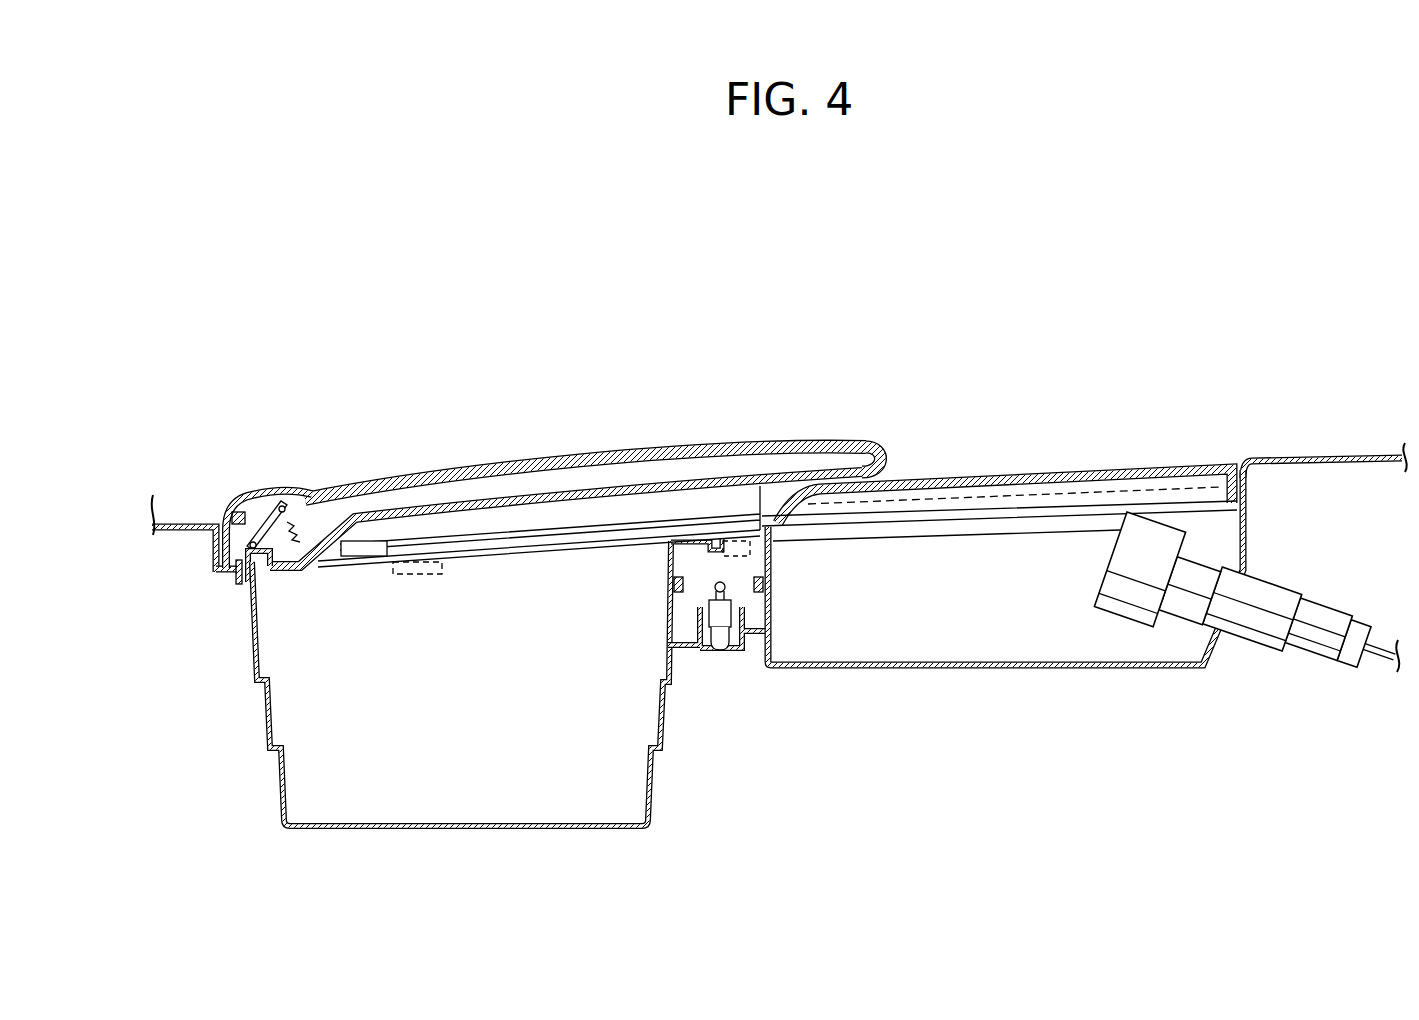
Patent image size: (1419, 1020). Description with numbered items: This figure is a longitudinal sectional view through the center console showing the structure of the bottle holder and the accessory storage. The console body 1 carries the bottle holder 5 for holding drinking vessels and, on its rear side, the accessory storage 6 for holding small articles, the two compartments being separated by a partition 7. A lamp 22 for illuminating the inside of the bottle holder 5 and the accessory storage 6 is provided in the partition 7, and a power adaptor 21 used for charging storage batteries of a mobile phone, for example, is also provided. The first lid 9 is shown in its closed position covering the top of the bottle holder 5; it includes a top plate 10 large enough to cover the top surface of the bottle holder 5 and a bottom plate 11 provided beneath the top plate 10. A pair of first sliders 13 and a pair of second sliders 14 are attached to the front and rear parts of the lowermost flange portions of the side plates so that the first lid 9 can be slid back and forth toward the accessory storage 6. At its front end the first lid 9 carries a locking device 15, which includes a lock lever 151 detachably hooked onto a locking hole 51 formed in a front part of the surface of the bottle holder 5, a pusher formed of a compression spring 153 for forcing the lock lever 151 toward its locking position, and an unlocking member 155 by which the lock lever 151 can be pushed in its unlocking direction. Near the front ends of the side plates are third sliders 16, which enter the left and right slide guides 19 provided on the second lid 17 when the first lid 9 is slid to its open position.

The console body 1 is at (1290, 446).
The bottle holder 5 is at (462, 813).
The accessory storage 6 is at (997, 652).
The partition 7 is at (712, 528).
The first lid 9 is at (627, 444).
The top plate 10 is at (493, 465).
The bottom plate 11 is at (511, 505).
The first sliders 13 is at (432, 574).
The second sliders 14 is at (750, 550).
The locking device 15 is at (242, 582).
The third sliders 16 is at (360, 557).
The second lid 17 is at (1037, 466).
The slide guides 19 is at (933, 504).
The power adaptor 21 is at (1140, 597).
The lamp 22 is at (725, 593).
The locking hole 51 is at (232, 568).
The lock lever 151 is at (240, 514).
The compression spring 153 is at (298, 526).
The unlocking member 155 is at (283, 496).